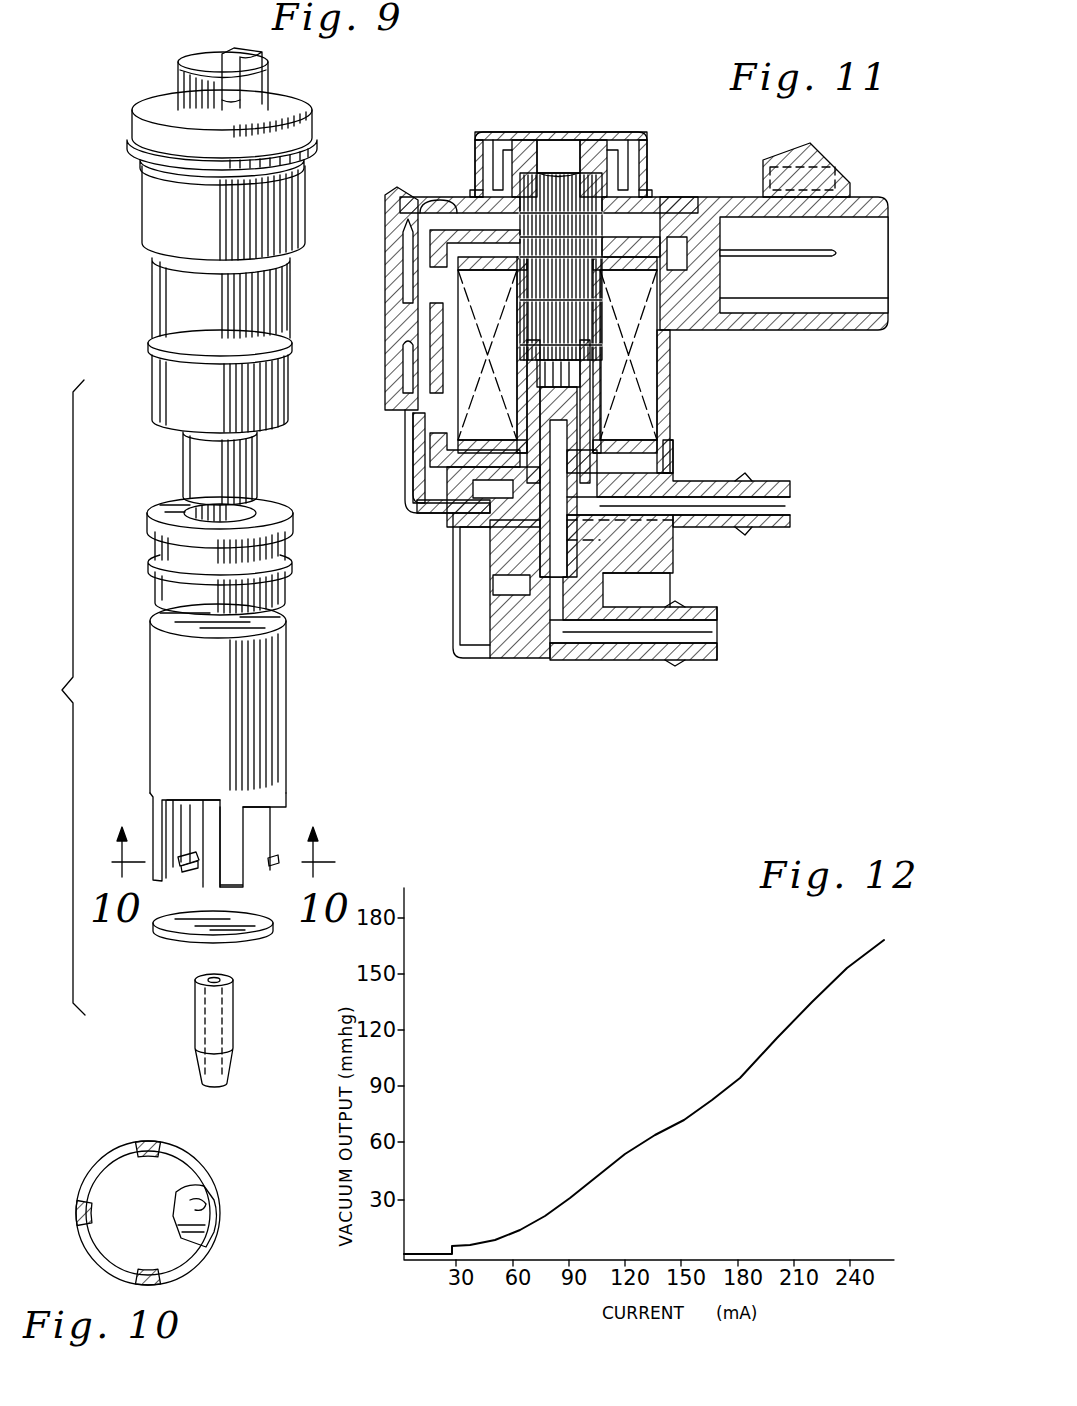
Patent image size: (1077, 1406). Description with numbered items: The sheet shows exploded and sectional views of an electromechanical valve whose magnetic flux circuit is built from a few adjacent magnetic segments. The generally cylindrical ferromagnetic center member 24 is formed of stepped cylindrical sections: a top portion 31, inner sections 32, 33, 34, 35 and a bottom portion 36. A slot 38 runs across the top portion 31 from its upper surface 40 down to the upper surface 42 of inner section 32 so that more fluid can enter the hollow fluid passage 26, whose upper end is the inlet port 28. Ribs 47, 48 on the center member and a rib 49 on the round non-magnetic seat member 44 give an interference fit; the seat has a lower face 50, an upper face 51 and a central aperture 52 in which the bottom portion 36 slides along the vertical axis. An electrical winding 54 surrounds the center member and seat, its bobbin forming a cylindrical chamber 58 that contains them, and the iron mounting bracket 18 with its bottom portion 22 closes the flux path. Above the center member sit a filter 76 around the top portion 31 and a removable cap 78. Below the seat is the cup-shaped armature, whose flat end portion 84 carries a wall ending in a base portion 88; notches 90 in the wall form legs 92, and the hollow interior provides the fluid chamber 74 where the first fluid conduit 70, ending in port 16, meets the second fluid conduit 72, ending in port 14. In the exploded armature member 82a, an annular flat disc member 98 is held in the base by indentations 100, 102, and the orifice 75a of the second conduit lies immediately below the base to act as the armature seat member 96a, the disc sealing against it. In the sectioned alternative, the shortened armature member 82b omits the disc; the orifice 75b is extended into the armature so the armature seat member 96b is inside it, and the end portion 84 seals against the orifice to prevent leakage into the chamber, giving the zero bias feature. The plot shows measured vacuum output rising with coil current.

In FIG. 11, the port 14 is at (724, 633).
In FIG. 11, the port 16 is at (797, 506).
In FIG. 11, the mounting bracket 18 is at (410, 418).
In FIG. 11, the bottom portion 22 is at (442, 505).
In FIG. 9, the center member 24 is at (138, 211).
In FIG. 11, the center member 24 is at (606, 225).
In FIG. 11, the fluid passage 26 is at (520, 172).
In FIG. 11, the inlet port 28 is at (560, 140).
In FIG. 9, the top portion 31 is at (266, 80).
In FIG. 9, the inner section 32 is at (312, 126).
In FIG. 9, the inner section 33 is at (296, 226).
In FIG. 9, the inner section 34 is at (276, 311).
In FIG. 9, the inner section 35 is at (281, 399).
In FIG. 9, the bottom portion 36 is at (246, 470).
In FIG. 9, the slot 38 is at (246, 100).
In FIG. 9, the upper surface 40 is at (190, 62).
In FIG. 9, the upper surface 42 is at (150, 100).
In FIG. 9, the non-magnetic seat member 44 is at (271, 553).
In FIG. 11, the non-magnetic seat member 44 is at (601, 376).
In FIG. 9, the rib 47 is at (305, 154).
In FIG. 9, the rib 48 is at (291, 344).
In FIG. 9, the rib 49 is at (276, 580).
In FIG. 9, the lower face 50 is at (284, 609).
In FIG. 9, the upper face 51 is at (276, 503).
In FIG. 9, the aperture 52 is at (236, 516).
In FIG. 11, the electrical winding 54 is at (652, 356).
In FIG. 11, the cylindrical chamber 58 is at (668, 428).
In FIG. 11, the first fluid conduit 70 is at (788, 484).
In FIG. 11, the second fluid conduit 72 is at (700, 613).
In FIG. 11, the fluid chamber 74 is at (482, 545).
In FIG. 9, the orifice 75a is at (228, 1036).
In FIG. 11, the orifice 75b is at (568, 466).
In FIG. 11, the filter 76 is at (601, 140).
In FIG. 11, the cap 78 is at (646, 150).
In FIG. 9, the armature member 82a is at (304, 715).
In FIG. 11, the armature member 82b is at (594, 433).
In FIG. 9, the end portion 84 is at (266, 623).
In FIG. 9, the base portion 88 is at (272, 843).
In FIG. 10, the notch 90 is at (185, 1160).
In FIG. 9, the leg 92 is at (276, 812).
In FIG. 10, the leg 92 is at (155, 1280).
In FIG. 9, the armature seat member 96a is at (229, 982).
In FIG. 11, the armature seat member 96b is at (570, 420).
In FIG. 9, the flat disc member 98 is at (262, 930).
In FIG. 9, the indentation 100 is at (266, 870).
In FIG. 10, the indentation 100 is at (206, 1190).
In FIG. 9, the indentation 102 is at (185, 878).